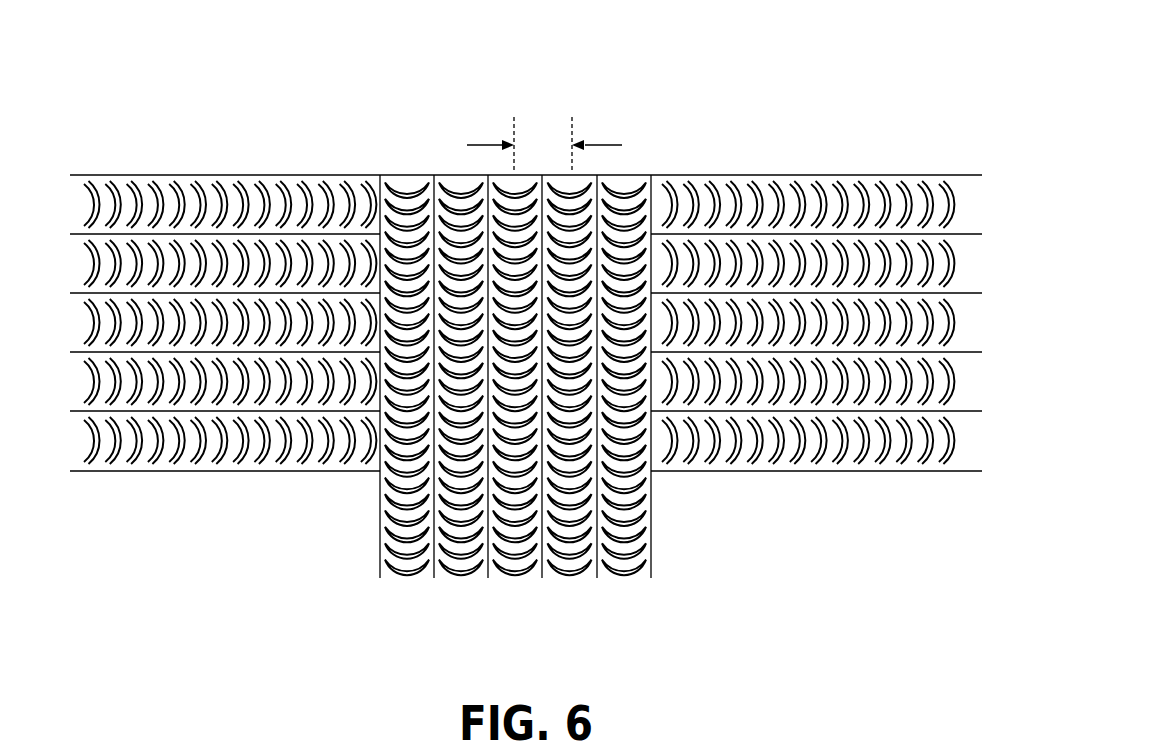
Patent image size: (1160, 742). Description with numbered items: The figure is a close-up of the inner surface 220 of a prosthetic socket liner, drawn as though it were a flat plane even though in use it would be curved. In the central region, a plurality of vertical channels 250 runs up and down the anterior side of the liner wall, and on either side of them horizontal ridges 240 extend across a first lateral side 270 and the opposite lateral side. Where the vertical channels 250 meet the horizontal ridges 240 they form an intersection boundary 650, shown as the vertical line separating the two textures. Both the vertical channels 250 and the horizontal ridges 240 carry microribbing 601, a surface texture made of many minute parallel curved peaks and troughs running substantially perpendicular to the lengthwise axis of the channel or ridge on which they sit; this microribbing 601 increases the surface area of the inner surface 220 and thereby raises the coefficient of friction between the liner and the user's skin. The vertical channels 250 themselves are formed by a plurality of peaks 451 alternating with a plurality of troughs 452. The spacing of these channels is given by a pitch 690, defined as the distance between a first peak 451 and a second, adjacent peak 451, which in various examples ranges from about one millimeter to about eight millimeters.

The first lateral side 270 is at (741, 57).
The horizontal ridges 240 is at (182, 203).
The inner surface 220 is at (250, 382).
The microribbing 601 is at (835, 323).
The intersection boundary 650 is at (378, 252).
The troughs 452 is at (485, 522).
The peaks 451 is at (628, 543).
The vertical channels 250 is at (622, 190).
The pitch 690 is at (544, 143).